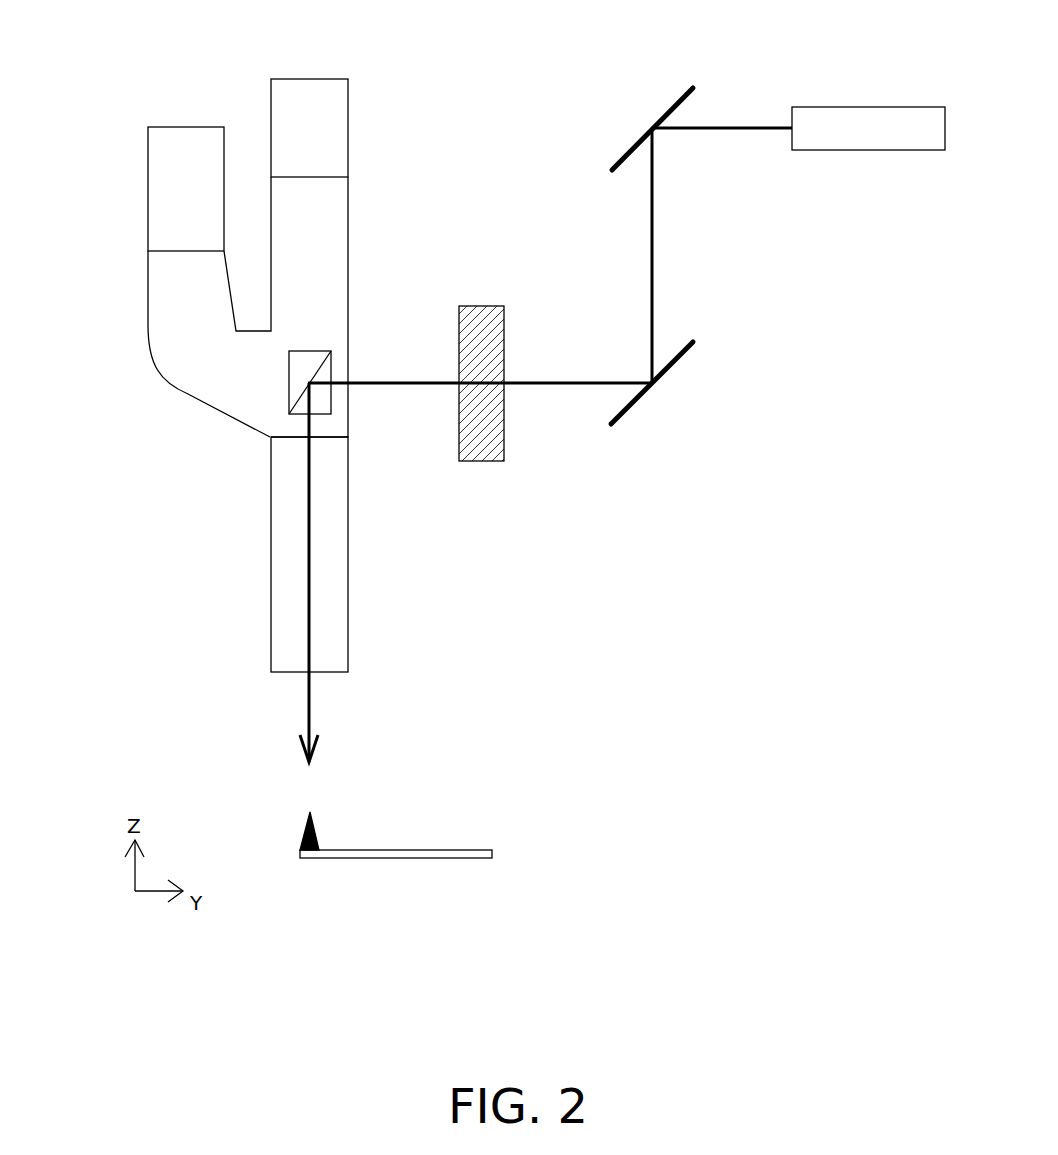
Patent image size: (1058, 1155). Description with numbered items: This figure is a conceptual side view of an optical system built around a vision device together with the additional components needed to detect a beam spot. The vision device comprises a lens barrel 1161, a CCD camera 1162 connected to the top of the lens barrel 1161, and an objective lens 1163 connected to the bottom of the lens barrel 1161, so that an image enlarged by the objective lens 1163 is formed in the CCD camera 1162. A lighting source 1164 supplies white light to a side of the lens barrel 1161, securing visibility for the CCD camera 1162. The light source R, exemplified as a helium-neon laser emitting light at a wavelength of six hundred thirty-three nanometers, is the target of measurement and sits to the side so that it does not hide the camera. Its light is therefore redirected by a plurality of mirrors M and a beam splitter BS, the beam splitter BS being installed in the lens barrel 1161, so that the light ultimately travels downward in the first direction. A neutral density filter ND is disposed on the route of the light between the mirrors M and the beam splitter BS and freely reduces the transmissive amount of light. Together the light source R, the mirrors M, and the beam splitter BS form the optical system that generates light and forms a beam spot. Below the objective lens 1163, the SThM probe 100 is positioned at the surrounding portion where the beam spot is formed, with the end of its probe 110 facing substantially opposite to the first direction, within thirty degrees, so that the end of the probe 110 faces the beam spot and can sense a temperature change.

The lens barrel 1161 is at (337, 258).
The CCD camera 1162 is at (337, 127).
The objective lens 1163 is at (337, 609).
The lighting source 1164 is at (158, 174).
The beam splitter BS is at (288, 376).
The neutral density filter ND is at (483, 442).
The mirror M is at (653, 125).
The light source R is at (863, 133).
The probe 110 is at (315, 822).
The SThM probe 100 is at (383, 910).